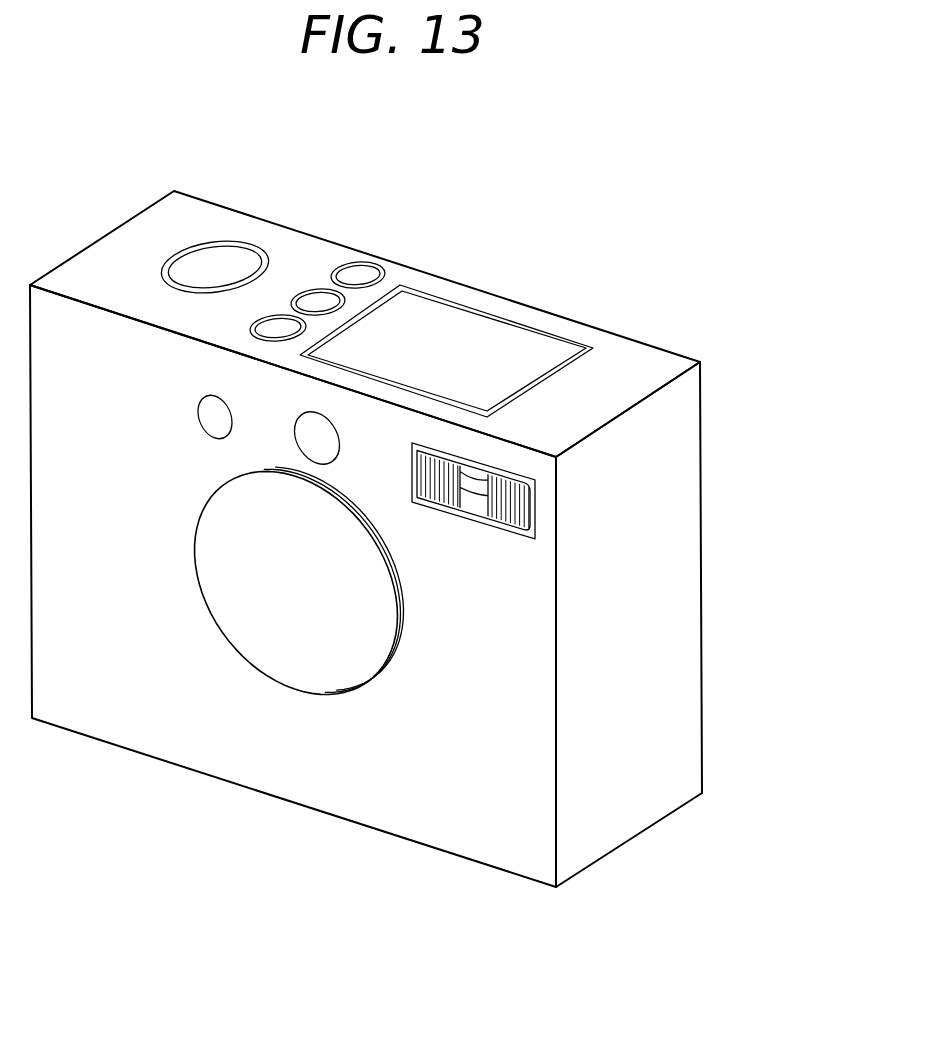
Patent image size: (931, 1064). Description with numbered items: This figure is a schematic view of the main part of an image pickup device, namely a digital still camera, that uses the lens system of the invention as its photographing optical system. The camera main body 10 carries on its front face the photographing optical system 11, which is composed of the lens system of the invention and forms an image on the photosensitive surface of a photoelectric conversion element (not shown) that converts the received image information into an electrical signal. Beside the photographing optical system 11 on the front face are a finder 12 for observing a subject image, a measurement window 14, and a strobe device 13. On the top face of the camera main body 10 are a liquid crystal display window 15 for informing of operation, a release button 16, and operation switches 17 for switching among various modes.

The camera main body 10 is at (683, 693).
The photographing optical system 11 is at (228, 579).
The finder 12 is at (310, 444).
The strobe device 13 is at (515, 508).
The measurement window 14 is at (207, 418).
The liquid crystal display window 15 is at (488, 337).
The release button 16 is at (212, 252).
The operation switches 17 is at (278, 322).